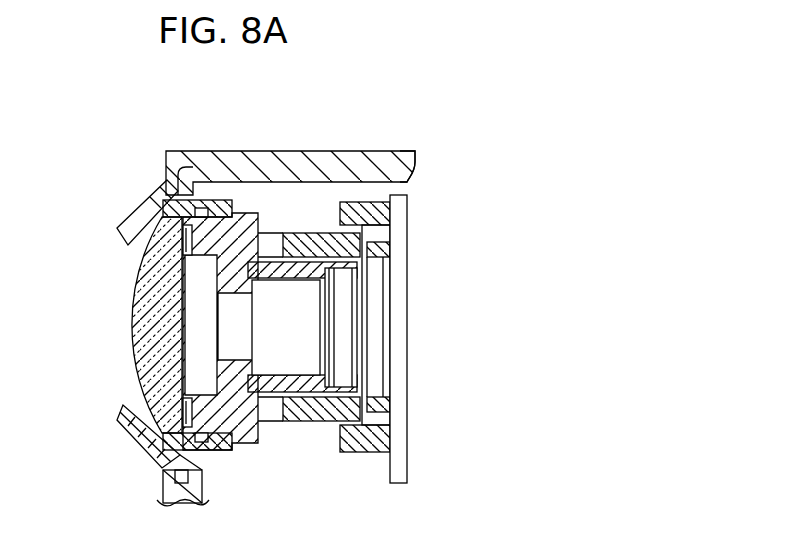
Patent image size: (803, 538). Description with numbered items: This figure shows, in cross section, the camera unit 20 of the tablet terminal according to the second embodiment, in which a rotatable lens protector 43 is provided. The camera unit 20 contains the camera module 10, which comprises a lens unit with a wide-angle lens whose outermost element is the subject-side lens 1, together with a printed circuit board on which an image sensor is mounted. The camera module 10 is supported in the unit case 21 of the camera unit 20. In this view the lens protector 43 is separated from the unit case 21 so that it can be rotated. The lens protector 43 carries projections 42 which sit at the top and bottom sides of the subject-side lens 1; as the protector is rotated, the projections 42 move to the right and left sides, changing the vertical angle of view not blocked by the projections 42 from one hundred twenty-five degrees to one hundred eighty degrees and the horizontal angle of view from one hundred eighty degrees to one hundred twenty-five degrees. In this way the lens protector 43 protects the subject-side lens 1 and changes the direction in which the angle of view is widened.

The subject-side lens 1 is at (127, 323).
The camera module 10 is at (313, 454).
The camera unit 20 is at (301, 137).
The unit case 21 is at (395, 151).
The projections 42 is at (133, 198).
The lens protector 43 is at (135, 144).